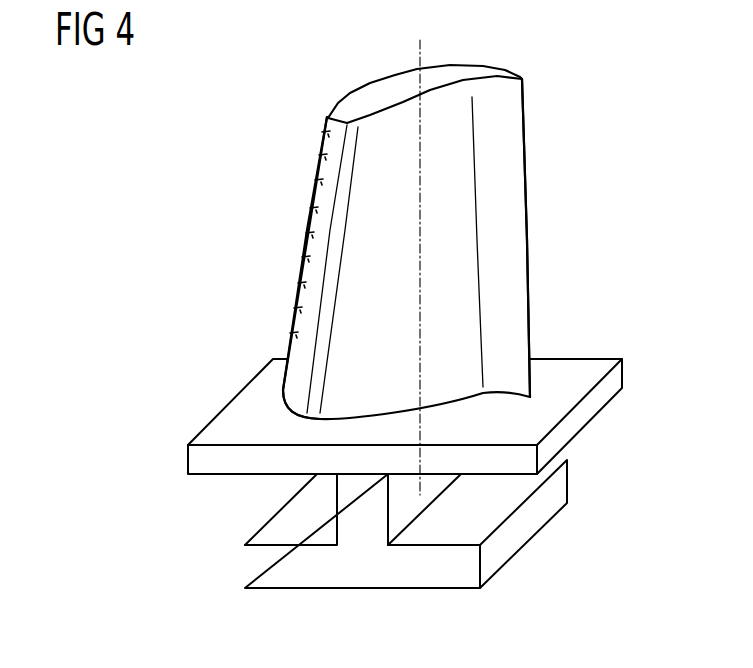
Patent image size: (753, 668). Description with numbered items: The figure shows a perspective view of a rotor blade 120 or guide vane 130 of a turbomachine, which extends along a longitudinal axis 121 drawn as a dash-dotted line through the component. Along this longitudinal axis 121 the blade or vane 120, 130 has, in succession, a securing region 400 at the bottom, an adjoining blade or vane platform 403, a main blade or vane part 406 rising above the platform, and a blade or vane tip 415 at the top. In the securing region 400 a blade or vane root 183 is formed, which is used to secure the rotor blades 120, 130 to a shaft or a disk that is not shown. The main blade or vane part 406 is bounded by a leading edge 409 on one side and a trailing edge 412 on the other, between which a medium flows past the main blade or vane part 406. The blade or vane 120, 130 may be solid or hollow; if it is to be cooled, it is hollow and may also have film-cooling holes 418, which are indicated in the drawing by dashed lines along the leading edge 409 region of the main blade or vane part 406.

The rotor blade 120 is at (348, 262).
The guide vane 130 is at (348, 262).
The longitudinal axis 121 is at (418, 60).
The blade or vane tip 415 is at (345, 104).
The film-cooling holes 418 is at (325, 132).
The leading edge 409 is at (313, 183).
The trailing edge 412 is at (533, 202).
The main blade or vane part 406 is at (262, 384).
The blade or vane platform 403 is at (590, 408).
The securing region 400 is at (386, 524).
The blade or vane root 183 is at (293, 522).